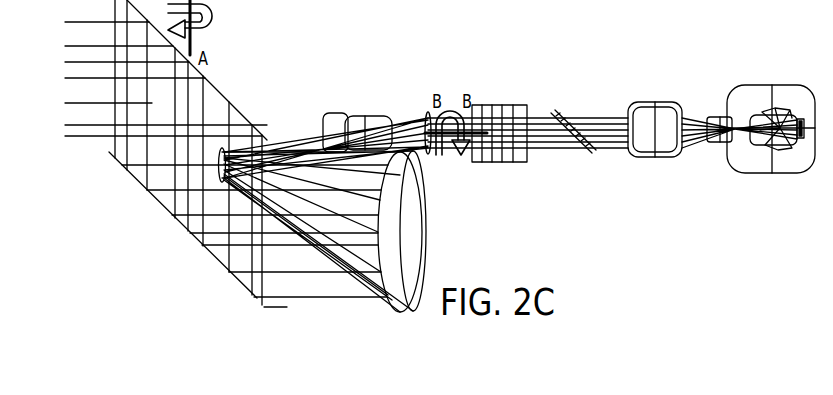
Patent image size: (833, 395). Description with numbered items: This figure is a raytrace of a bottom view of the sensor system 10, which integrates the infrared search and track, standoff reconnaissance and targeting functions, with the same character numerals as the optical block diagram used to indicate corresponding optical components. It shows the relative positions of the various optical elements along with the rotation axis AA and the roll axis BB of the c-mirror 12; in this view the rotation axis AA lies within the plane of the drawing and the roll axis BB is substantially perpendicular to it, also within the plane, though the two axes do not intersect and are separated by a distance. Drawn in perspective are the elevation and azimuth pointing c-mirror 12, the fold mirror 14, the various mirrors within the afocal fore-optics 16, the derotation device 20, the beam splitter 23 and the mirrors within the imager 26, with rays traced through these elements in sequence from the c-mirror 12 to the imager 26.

The sensor system 10 is at (633, 61).
The c-mirror 12 is at (219, 91).
The fold mirror 14 is at (217, 260).
The afocal telescope multi-mirror arrangement fore-optics 16 is at (415, 313).
The derotation optical device 20 is at (495, 105).
The laser dichroic beam splitter mirror 23 is at (557, 112).
The multi-mirror relayed imager 26 is at (820, 178).